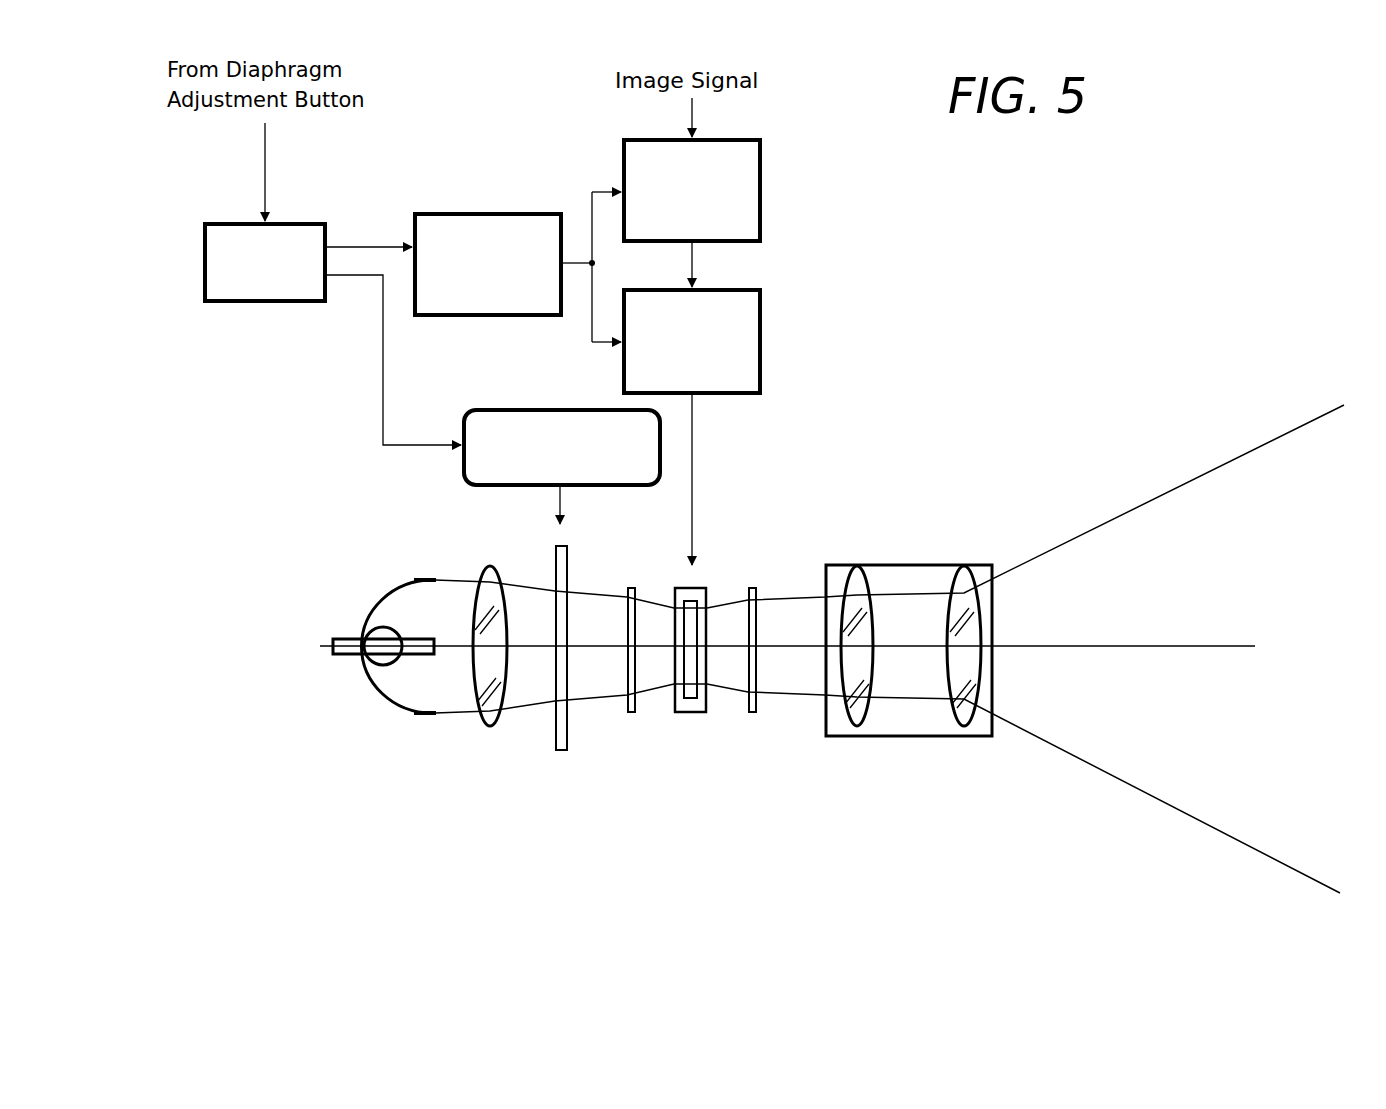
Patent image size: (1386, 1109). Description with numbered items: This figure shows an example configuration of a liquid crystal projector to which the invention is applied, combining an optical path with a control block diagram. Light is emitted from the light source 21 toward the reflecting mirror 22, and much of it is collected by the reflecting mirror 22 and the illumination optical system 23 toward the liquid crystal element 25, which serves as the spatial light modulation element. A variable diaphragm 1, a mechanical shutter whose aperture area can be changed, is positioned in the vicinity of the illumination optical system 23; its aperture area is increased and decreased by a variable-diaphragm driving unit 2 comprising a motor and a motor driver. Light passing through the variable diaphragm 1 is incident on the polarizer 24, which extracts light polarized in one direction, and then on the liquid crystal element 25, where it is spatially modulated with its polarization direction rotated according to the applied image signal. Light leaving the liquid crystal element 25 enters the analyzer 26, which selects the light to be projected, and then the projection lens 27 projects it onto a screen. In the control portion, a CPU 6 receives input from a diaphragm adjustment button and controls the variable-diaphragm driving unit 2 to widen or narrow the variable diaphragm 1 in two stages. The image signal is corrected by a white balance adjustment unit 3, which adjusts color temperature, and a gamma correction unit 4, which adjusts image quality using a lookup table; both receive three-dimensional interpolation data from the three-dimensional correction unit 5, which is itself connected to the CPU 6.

The variable diaphragm 1 is at (559, 750).
The variable-diaphragm driving unit 2 is at (558, 408).
The white balance adjustment unit 3 is at (762, 190).
The gamma correction unit 4 is at (762, 343).
The three-dimensional correction unit 5 is at (488, 211).
The CPU 6 is at (305, 222).
The light source 21 is at (382, 663).
The reflecting mirror 22 is at (410, 714).
The illumination optical system 23 is at (490, 728).
The polarizer 24 is at (630, 713).
The liquid crystal element 25 is at (692, 713).
The analyzer 26 is at (752, 713).
The projection lens 27 is at (908, 738).